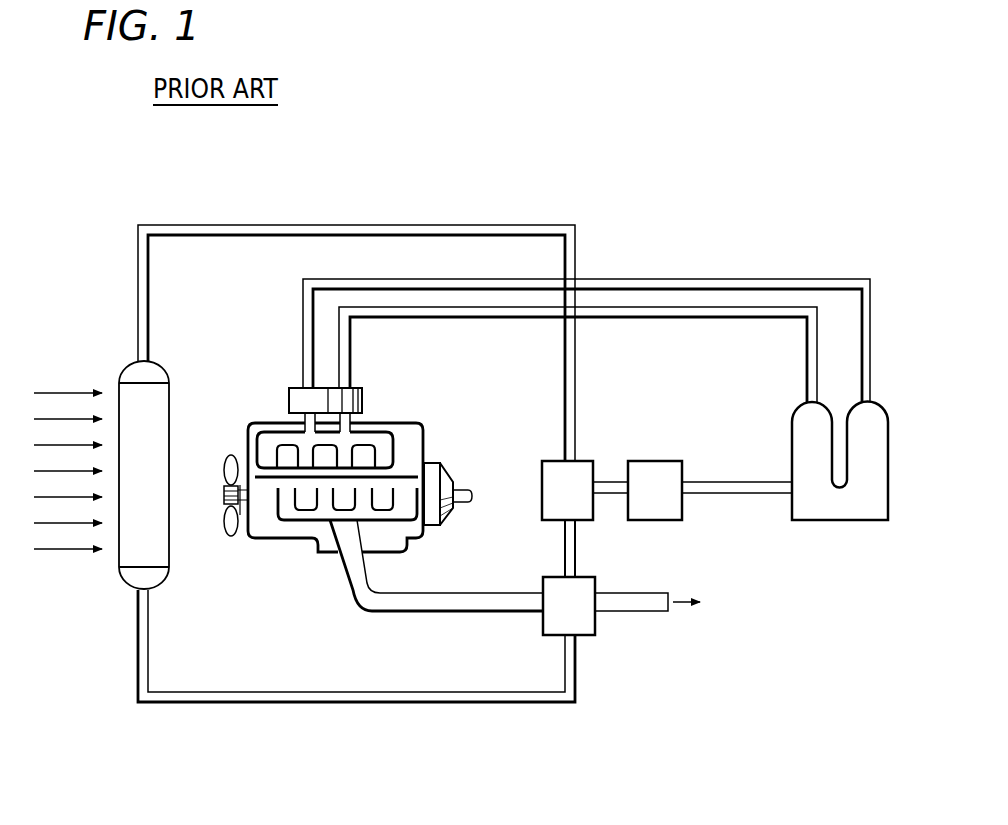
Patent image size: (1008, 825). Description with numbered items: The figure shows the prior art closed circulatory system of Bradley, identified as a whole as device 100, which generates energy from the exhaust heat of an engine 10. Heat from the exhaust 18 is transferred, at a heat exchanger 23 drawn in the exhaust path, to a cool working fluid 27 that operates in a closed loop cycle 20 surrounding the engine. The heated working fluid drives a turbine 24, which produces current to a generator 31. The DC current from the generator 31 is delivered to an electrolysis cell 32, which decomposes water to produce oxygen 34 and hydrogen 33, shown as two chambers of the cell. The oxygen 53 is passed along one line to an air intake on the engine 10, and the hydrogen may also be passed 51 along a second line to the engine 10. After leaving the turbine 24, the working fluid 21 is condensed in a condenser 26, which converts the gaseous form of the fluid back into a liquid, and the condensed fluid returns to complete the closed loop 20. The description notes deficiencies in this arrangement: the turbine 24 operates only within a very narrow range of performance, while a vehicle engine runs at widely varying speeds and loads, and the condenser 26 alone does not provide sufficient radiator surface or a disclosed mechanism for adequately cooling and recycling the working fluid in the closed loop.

The device 100 is at (372, 150).
The engine 10 is at (258, 430).
The exhaust 18 is at (461, 591).
The closed loop cycle 20 is at (172, 256).
The working fluid 21 is at (491, 224).
The heat exchanger 23 is at (590, 636).
The turbine 24 is at (548, 460).
The condenser 26 is at (160, 447).
The cool working fluid 27 is at (250, 690).
The generator 31 is at (658, 460).
The electrolysis cell 32 is at (830, 512).
The hydrogen 33 is at (855, 444).
The oxygen 34 is at (799, 444).
The hydrogen passage 51 is at (745, 278).
The oxygen passage 53 is at (748, 318).